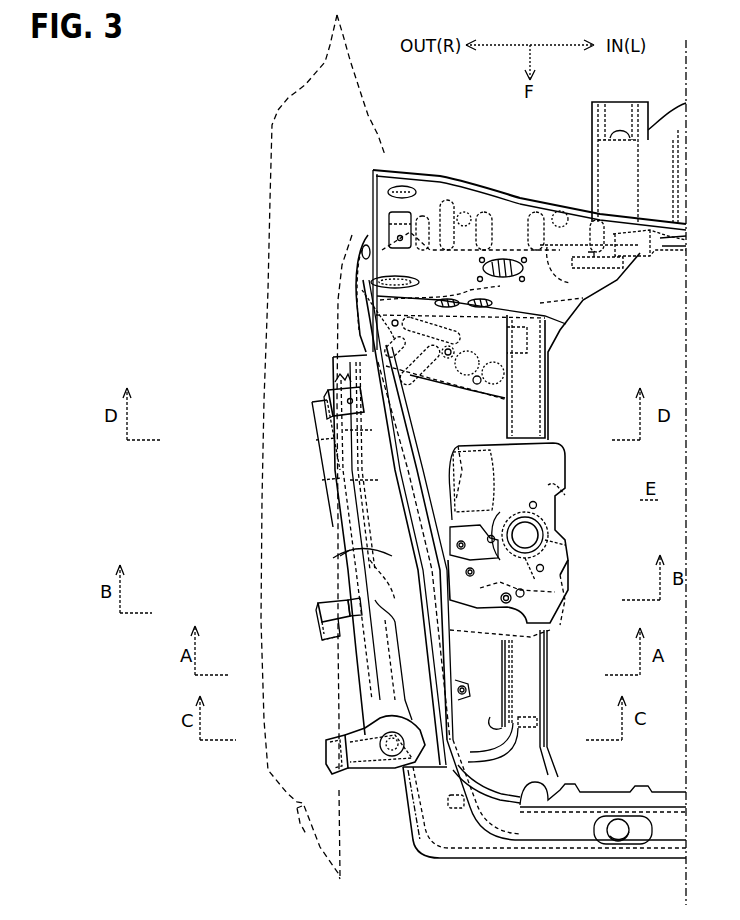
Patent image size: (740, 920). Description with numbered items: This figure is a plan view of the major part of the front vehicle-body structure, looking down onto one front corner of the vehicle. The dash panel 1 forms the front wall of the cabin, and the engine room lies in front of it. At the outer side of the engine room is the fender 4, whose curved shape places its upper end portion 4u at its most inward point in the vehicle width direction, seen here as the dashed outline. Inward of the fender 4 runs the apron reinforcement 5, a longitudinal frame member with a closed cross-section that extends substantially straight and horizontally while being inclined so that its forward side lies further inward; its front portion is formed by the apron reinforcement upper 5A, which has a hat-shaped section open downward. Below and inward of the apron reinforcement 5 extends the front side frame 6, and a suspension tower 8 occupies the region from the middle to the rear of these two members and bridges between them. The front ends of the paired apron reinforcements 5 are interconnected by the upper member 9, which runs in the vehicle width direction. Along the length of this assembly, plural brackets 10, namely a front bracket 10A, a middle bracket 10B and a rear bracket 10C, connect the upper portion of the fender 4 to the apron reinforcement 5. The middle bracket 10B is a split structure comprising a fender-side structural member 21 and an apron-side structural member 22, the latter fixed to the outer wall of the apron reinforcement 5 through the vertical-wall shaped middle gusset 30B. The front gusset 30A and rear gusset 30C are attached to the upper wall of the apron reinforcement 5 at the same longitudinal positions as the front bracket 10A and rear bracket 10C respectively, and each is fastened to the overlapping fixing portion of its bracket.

The dash panel 1 is at (511, 192).
The front fender panel 4 is at (262, 338).
The upper end portion 4u is at (367, 527).
The apron reinforcement 5 is at (332, 518).
The apron reinforcement upper 5A is at (342, 554).
The front side frame 6 is at (552, 692).
The suspension tower 8 is at (560, 510).
The upper member 9 is at (610, 866).
The bracket 10 is at (270, 575).
The front bracket 10A is at (328, 757).
The middle bracket 10B is at (318, 617).
The rear bracket 10C is at (270, 450).
The fender-side structural member 21 is at (326, 641).
The apron-side structural member 22 is at (374, 558).
The front gusset 30A is at (392, 760).
The middle gusset 30B is at (392, 635).
The rear gusset 30C is at (328, 410).